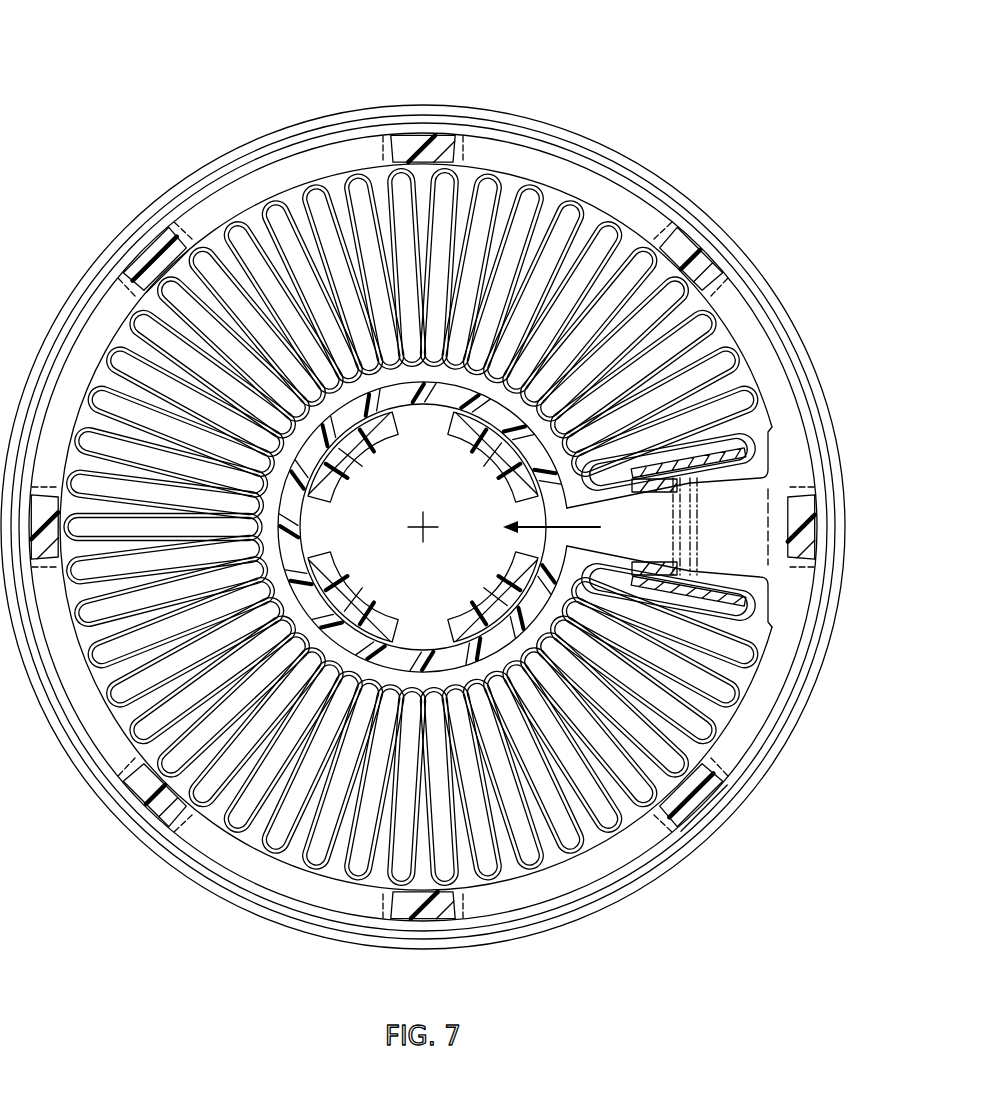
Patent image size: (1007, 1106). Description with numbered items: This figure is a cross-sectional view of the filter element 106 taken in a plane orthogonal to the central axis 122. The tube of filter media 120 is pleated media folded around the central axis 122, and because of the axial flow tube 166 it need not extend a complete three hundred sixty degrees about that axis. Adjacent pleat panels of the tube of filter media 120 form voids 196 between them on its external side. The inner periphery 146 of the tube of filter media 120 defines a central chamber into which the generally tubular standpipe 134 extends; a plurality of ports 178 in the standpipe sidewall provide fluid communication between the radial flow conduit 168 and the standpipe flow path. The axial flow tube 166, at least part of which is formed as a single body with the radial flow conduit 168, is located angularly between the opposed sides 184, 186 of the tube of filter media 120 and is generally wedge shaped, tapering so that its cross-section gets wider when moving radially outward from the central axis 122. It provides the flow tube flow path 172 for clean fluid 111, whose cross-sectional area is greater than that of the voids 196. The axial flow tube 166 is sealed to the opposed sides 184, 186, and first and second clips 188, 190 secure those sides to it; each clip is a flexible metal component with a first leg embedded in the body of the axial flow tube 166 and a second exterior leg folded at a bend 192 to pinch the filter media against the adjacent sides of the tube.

The filter element 106 is at (664, 148).
The tube of filter media 120 is at (515, 203).
The ports 178 is at (402, 412).
The axial flow tube 166 is at (737, 444).
The second clip 190 is at (733, 500).
The flow tube flow path 172 is at (787, 445).
The bend 192 is at (772, 452).
The inner periphery 146 is at (486, 438).
The standpipe 134 is at (356, 452).
The clean fluid 111 is at (533, 526).
The opposed side of the tube of filter media 186 is at (705, 468).
The central axis 122 is at (420, 530).
The opposed side of the tube of filter media 184 is at (748, 592).
The radial flow conduit 168 is at (560, 593).
The first clip 188 is at (748, 610).
The voids 196 is at (636, 815).